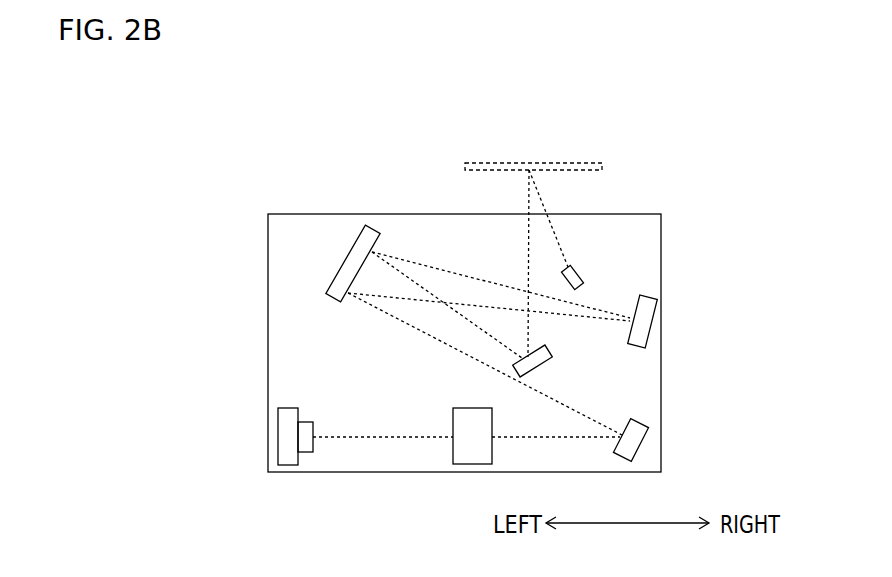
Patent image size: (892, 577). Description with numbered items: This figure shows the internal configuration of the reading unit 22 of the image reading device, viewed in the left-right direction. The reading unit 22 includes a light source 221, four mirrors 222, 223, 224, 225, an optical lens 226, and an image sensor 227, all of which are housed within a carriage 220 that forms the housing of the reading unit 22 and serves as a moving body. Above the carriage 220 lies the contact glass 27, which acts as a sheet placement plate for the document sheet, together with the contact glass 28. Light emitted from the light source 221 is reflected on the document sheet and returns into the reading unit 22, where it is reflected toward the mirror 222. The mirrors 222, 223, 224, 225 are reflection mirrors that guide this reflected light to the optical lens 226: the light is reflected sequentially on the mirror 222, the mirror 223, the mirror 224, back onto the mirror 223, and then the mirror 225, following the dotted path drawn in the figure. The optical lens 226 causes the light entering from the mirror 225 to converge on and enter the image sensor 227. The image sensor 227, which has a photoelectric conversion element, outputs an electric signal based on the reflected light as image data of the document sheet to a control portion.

The reading unit 22 is at (236, 176).
The carriage 220 is at (268, 248).
The contact glass 27 is at (468, 166).
The contact glass 28 is at (533, 166).
The light source 221 is at (580, 278).
The mirror 222 is at (548, 373).
The mirror 223 is at (335, 300).
The mirror 224 is at (650, 340).
The mirror 225 is at (640, 452).
The optical lens 226 is at (472, 465).
The image sensor 227 is at (290, 466).